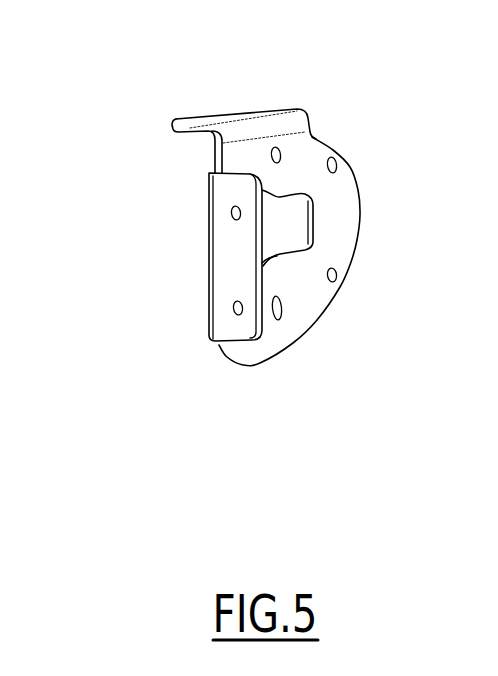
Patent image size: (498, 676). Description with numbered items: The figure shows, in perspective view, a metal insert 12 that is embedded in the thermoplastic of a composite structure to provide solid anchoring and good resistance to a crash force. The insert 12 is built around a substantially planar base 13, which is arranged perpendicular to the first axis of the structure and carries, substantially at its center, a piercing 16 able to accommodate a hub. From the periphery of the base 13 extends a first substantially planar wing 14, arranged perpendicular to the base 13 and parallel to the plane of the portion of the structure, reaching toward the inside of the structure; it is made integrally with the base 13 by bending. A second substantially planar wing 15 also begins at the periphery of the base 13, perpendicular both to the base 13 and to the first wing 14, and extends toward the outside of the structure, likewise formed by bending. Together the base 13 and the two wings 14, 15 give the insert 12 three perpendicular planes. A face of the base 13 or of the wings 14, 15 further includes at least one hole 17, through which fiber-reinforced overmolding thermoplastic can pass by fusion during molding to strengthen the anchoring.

The metal insert 12 is at (156, 63).
The base 13 is at (350, 220).
The first wing 14 is at (250, 113).
The second wing 15 is at (235, 270).
The piercing 16 is at (272, 232).
The hole 17 is at (246, 309).